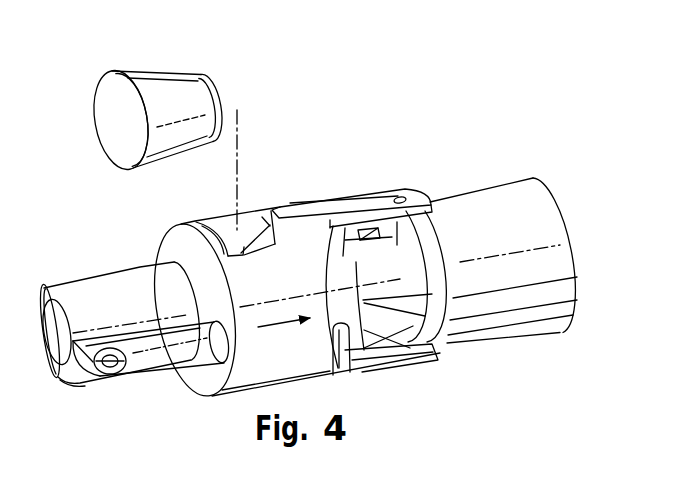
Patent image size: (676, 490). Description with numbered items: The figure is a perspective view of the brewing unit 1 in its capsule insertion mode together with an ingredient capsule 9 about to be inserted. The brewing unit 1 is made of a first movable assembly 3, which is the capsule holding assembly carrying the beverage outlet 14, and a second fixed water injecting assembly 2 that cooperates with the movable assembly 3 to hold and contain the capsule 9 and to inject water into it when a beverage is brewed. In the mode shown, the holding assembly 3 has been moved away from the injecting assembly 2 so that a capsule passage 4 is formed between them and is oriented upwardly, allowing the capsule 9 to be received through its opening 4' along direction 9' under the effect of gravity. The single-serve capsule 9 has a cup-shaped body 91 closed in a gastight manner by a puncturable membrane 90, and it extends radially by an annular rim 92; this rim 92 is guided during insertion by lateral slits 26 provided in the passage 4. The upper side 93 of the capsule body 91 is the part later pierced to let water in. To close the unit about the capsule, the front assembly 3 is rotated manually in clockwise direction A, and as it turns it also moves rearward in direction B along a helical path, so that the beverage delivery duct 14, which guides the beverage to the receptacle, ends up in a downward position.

The brewing unit 1 is at (519, 148).
The second fixed water injecting assembly 2 is at (440, 162).
The first movable assembly 3 is at (243, 208).
The capsule passage 4 is at (242, 216).
The opening 4' is at (291, 193).
The ingredient capsule 9 is at (164, 86).
The insertion direction 9' is at (295, 150).
The beverage outlet 14 is at (110, 375).
The lateral slits 26 is at (207, 228).
The puncturable membrane 90 is at (115, 122).
The cup-shaped body 91 is at (158, 72).
The annular rim 92 is at (112, 70).
The upper side of the capsule body 93 is at (223, 105).
The rotation direction A is at (119, 292).
The rearward direction B is at (284, 335).